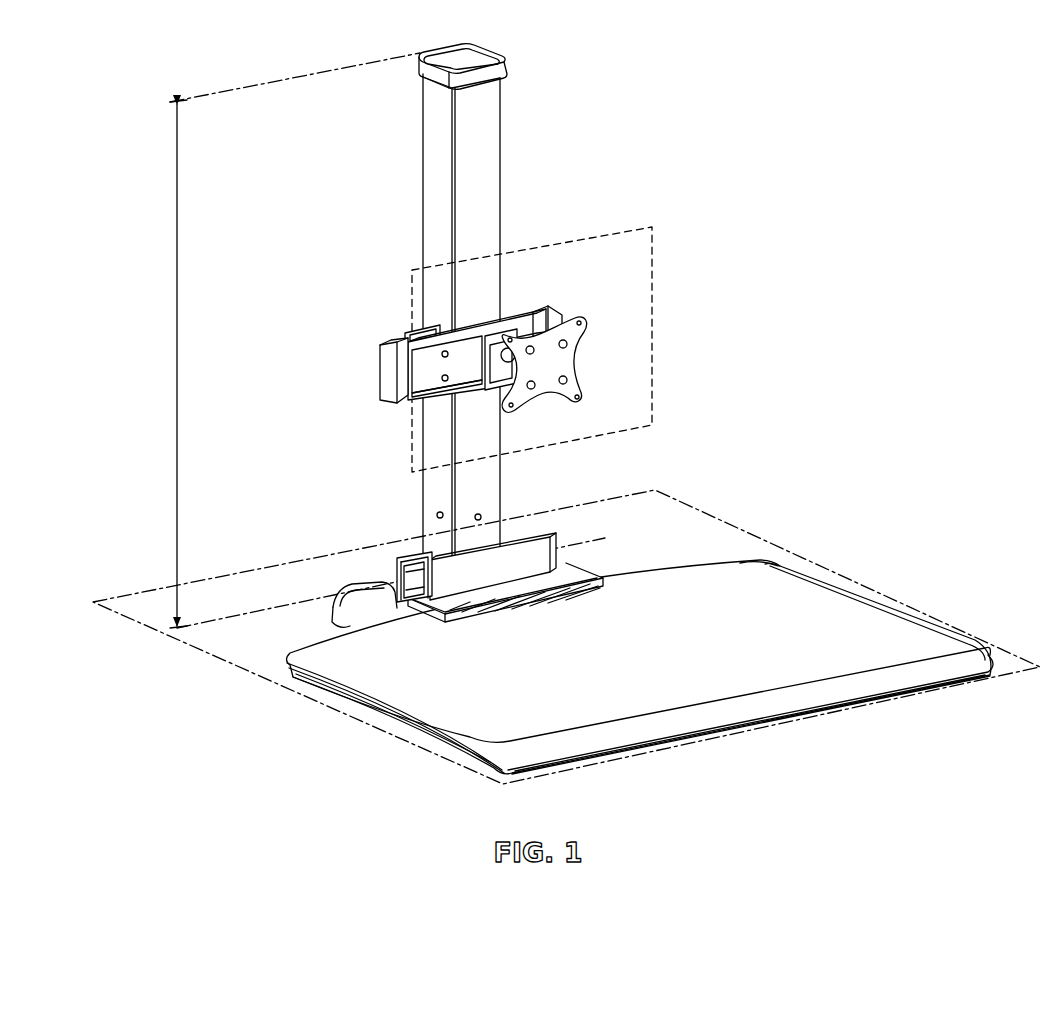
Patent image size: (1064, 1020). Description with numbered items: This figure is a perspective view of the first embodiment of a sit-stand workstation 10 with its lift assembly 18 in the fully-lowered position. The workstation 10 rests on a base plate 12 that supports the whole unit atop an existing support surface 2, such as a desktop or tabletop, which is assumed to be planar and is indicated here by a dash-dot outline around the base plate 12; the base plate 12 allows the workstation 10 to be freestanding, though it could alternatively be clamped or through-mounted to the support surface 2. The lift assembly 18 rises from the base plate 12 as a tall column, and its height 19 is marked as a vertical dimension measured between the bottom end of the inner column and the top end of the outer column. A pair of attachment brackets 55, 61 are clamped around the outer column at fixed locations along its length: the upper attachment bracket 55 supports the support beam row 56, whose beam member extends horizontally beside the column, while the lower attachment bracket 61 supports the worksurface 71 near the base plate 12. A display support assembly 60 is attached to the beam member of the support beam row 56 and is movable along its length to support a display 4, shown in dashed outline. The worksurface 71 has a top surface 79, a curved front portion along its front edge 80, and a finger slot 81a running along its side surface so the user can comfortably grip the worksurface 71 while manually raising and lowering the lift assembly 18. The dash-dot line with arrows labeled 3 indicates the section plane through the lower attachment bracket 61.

The sit-stand workstation 10 is at (757, 80).
The support surface 2 is at (215, 635).
The section line 3- 3 is at (357, 538).
The display 4 is at (653, 377).
The base plate 12 is at (630, 663).
The lift assembly 18 is at (540, 172).
The height 19 is at (295, 340).
The attachment bracket 55 is at (422, 330).
The support beam row 56 is at (362, 380).
The display support assembly 60 is at (580, 358).
The attachment bracket 61 is at (420, 548).
The worksurface 71 is at (878, 630).
The top surface 79 is at (771, 590).
The front edge 80 is at (755, 708).
The finger slot 81a is at (443, 735).